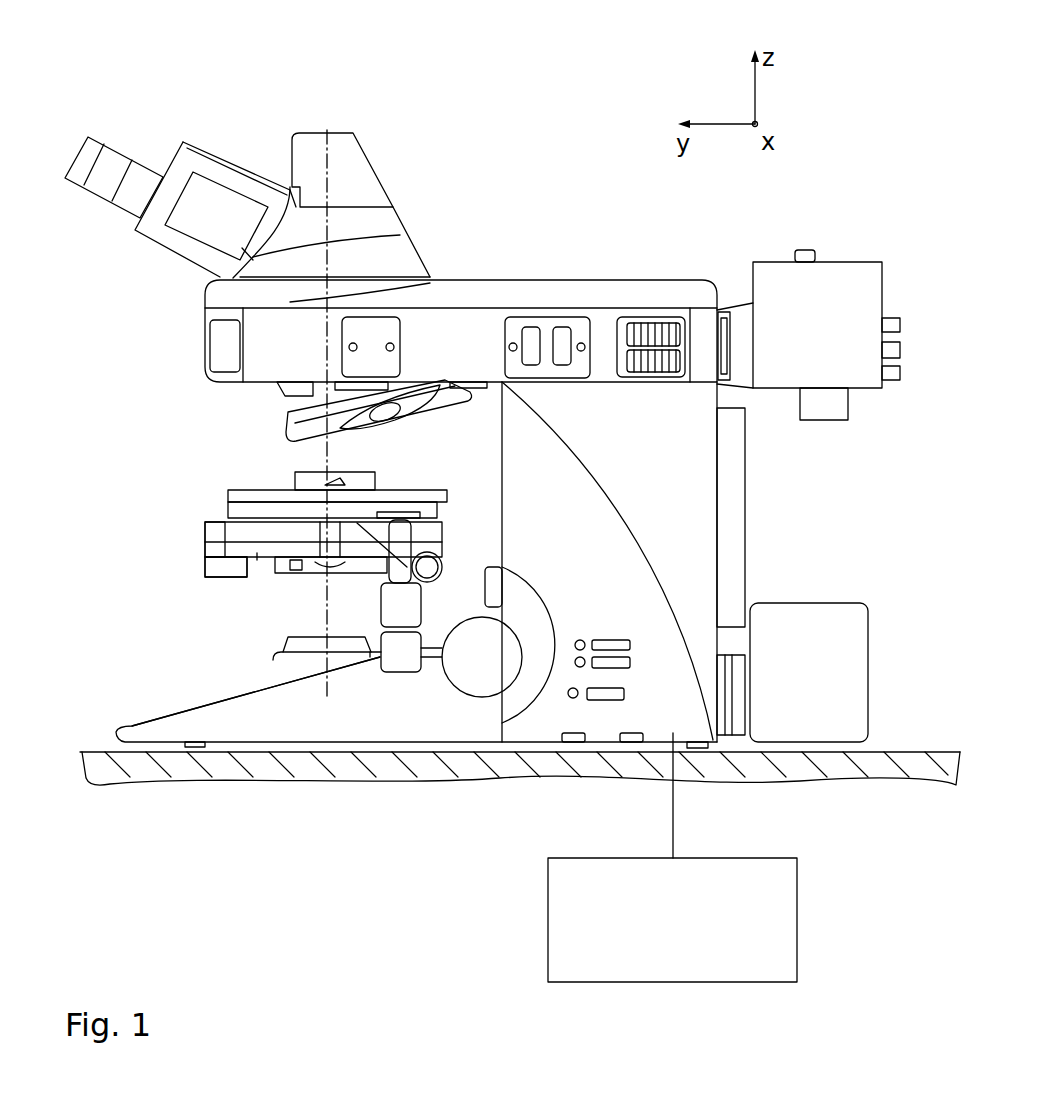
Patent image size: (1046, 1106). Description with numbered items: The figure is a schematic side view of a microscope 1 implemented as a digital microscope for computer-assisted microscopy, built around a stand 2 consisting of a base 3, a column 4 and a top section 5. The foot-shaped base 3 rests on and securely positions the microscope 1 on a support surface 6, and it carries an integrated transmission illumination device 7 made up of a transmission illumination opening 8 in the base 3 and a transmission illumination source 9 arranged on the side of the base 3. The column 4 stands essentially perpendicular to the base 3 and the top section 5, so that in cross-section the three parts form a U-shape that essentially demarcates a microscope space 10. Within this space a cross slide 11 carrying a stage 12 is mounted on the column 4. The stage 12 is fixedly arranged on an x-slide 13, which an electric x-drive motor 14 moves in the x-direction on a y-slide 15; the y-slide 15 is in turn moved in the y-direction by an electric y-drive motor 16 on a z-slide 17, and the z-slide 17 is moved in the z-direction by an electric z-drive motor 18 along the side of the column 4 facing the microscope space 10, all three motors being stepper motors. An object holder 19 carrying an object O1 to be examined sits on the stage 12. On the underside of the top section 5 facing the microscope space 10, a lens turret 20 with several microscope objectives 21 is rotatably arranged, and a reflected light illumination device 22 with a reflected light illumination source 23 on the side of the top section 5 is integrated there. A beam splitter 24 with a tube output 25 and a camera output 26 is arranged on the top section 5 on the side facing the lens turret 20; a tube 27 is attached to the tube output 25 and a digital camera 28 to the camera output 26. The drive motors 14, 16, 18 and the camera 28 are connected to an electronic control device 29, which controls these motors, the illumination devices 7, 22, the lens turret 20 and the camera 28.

The microscope 1 is at (611, 86).
The stand 2 is at (606, 268).
The base 3 is at (423, 735).
The column 4 is at (705, 517).
The top section 5 is at (488, 323).
The support surface 6 is at (720, 768).
The transmission illumination device 7 is at (258, 667).
The transmission illumination opening 8 is at (297, 648).
The transmission illumination source 9 is at (806, 735).
The microscope space 10 is at (300, 462).
The cross slide 11 is at (190, 574).
The stage 12 is at (228, 512).
The x-slide 13 is at (205, 526).
The x-drive motor 14 is at (400, 660).
The y-slide 15 is at (257, 560).
The y-drive motor 16 is at (213, 568).
The z-slide 17 is at (492, 563).
The z-drive motor 18 is at (478, 668).
The object holder 19 is at (228, 497).
The lens turret 20 is at (270, 407).
The microscope objectives 21 is at (300, 447).
The reflected light illumination device 22 is at (767, 248).
The reflected light illumination source 23 is at (833, 268).
The beam splitter 24 is at (417, 258).
The tube output 25 is at (290, 198).
The camera output 26 is at (390, 212).
The tube 27 is at (165, 185).
The camera 28 is at (345, 150).
The electronic control device 29 is at (548, 916).
The object O1 is at (296, 481).